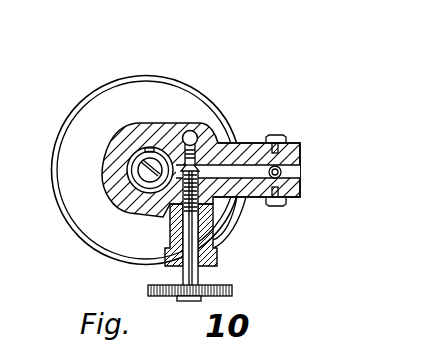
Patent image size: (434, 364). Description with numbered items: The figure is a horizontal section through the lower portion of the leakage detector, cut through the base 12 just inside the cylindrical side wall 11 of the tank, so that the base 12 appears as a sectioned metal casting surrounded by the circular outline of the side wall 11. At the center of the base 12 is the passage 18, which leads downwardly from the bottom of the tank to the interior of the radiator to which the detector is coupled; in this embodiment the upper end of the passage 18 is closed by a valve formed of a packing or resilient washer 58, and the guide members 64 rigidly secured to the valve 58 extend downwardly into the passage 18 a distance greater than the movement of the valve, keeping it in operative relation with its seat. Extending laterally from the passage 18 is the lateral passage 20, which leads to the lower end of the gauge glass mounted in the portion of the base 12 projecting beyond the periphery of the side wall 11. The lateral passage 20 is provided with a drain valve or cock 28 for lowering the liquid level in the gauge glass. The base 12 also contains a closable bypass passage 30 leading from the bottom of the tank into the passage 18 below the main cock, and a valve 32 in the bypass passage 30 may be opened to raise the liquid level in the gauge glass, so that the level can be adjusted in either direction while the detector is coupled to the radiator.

The side wall 11 is at (112, 78).
The base 12 is at (213, 141).
The passage 18 is at (145, 148).
The lateral passage 20 is at (234, 170).
The drain valve or cock 28 is at (292, 174).
The bypass passage 30 is at (188, 130).
The valve 32 is at (232, 292).
The packing or resilient washer 58 is at (160, 216).
The guide members 64 is at (128, 158).